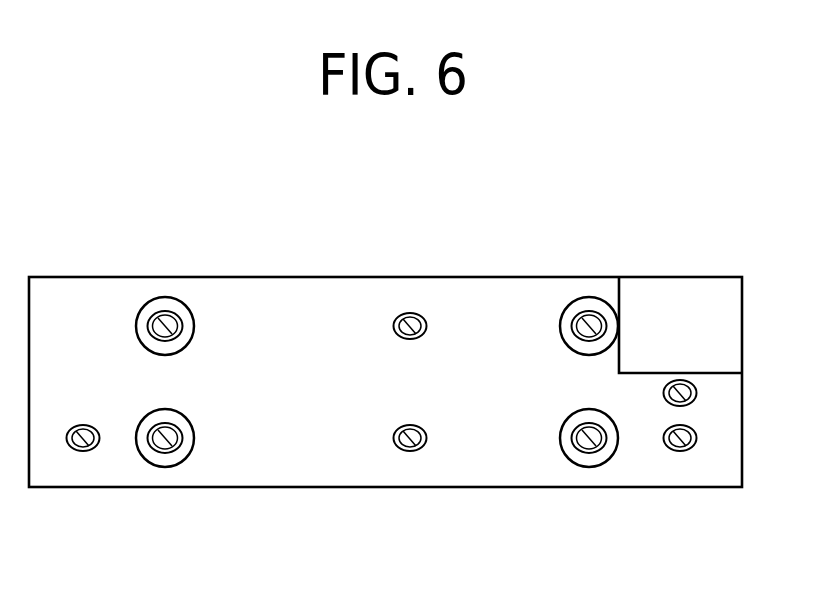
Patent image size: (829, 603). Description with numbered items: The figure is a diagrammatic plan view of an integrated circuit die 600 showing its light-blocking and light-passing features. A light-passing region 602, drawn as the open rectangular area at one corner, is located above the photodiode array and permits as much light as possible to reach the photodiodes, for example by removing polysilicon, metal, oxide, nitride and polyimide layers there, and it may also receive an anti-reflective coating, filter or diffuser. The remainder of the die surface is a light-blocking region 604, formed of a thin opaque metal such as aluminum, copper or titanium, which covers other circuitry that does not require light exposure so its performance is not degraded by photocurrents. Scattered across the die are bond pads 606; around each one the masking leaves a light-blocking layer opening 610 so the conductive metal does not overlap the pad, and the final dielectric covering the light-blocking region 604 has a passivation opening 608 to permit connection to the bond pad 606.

The integrated circuit die 600 is at (402, 487).
The light-passing region 602 is at (619, 286).
The light-blocking region 604 is at (474, 298).
The bond pad 606 is at (168, 282).
The passivation opening 608 is at (216, 275).
The light-blocking layer opening 610 is at (182, 325).